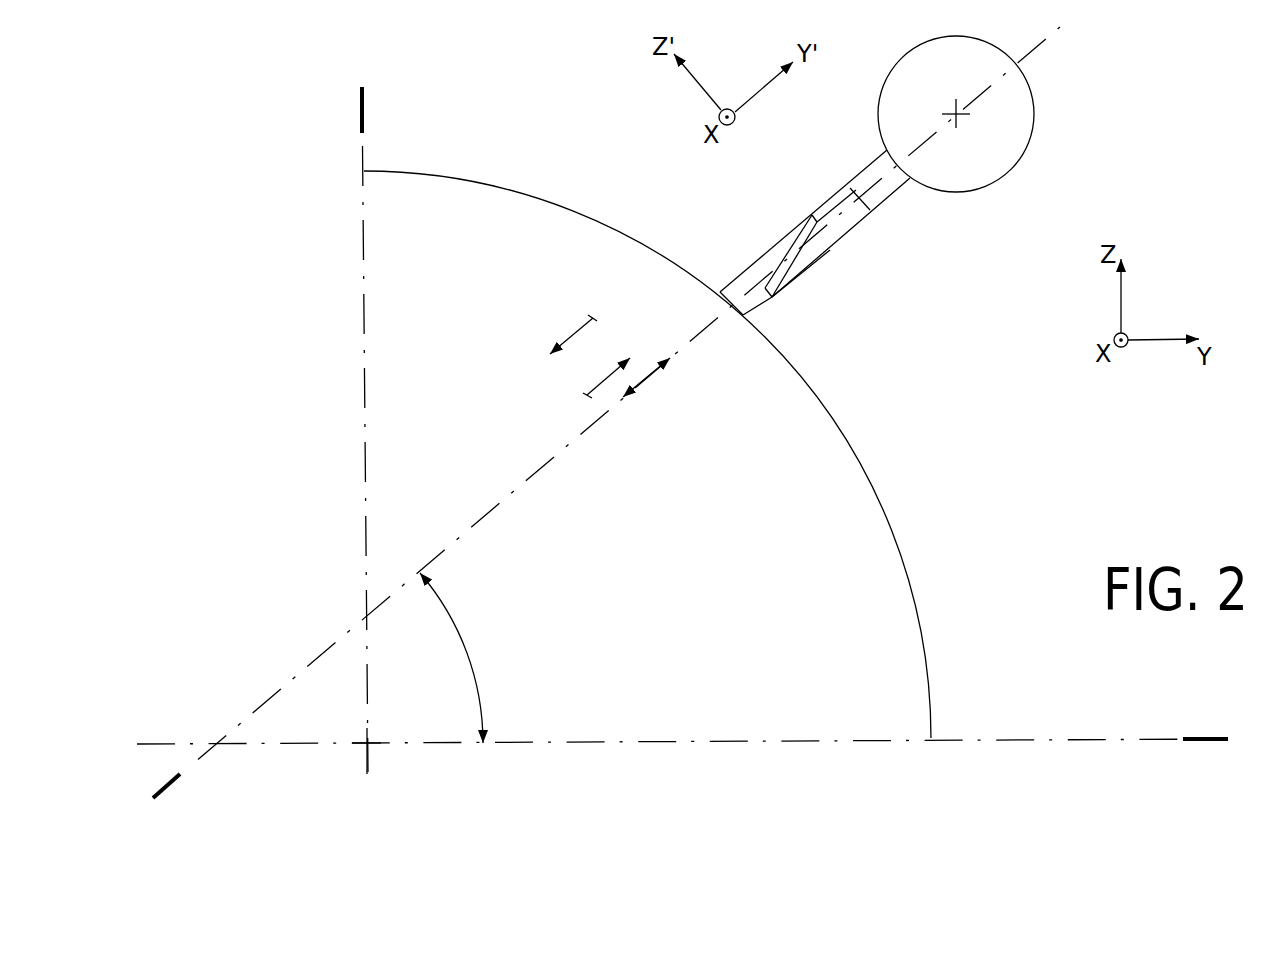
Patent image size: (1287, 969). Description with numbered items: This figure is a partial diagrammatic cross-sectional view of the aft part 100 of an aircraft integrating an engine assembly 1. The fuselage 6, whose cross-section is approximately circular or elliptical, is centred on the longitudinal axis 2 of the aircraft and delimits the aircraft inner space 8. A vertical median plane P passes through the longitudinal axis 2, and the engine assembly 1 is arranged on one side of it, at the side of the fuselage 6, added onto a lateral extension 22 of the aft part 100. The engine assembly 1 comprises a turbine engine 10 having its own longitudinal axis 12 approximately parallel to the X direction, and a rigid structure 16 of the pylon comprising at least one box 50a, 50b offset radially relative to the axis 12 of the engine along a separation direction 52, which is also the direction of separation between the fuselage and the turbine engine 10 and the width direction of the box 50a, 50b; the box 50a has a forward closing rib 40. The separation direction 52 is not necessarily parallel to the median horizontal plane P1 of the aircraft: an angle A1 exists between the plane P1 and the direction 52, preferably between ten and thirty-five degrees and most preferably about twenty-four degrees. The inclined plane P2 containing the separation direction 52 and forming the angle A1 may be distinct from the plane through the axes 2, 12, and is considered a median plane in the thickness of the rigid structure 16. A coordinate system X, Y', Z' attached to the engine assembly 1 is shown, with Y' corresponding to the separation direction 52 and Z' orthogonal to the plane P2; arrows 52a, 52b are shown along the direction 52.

The engine assembly 1 is at (1006, 286).
The longitudinal axis 2 is at (372, 742).
The fuselage 6 is at (522, 191).
The aircraft inner space 8 is at (646, 564).
The turbine engine 10 is at (1036, 128).
The longitudinal axis 12 is at (954, 110).
The rigid structure 16 is at (866, 219).
The lateral extension 22 is at (694, 256).
The forward closing rib 40 is at (867, 165).
The box 50a is at (901, 191).
The box 50b is at (831, 235).
The separation direction 52 is at (655, 387).
The first rotation direction 52a is at (577, 332).
The second rotation direction 52b is at (597, 386).
The aft part 100 is at (285, 330).
The angle A1 is at (466, 645).
The vertical median plane P is at (358, 108).
The median horizontal plane P1 is at (1208, 738).
The inclined plane P2 is at (165, 784).